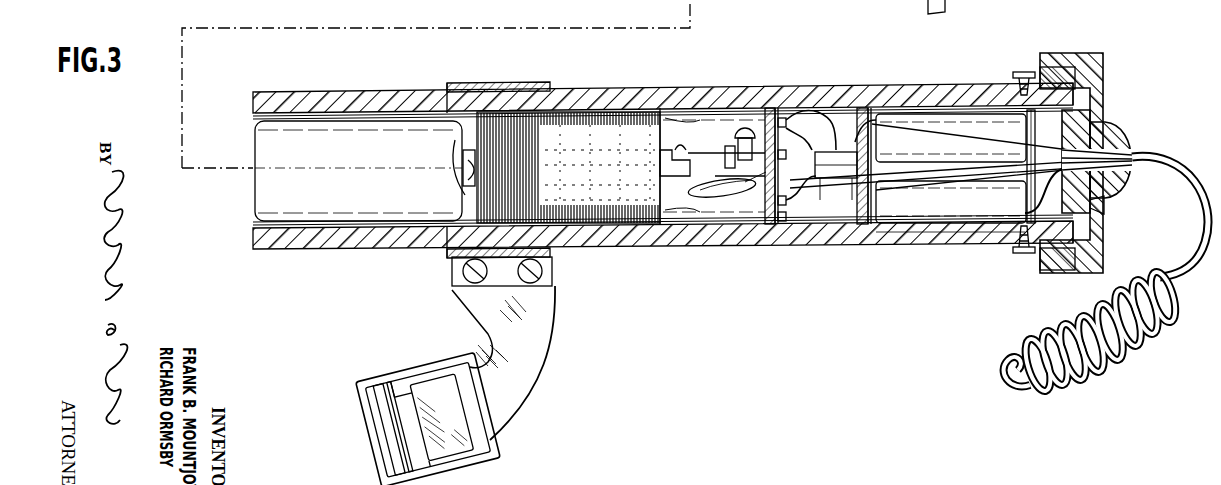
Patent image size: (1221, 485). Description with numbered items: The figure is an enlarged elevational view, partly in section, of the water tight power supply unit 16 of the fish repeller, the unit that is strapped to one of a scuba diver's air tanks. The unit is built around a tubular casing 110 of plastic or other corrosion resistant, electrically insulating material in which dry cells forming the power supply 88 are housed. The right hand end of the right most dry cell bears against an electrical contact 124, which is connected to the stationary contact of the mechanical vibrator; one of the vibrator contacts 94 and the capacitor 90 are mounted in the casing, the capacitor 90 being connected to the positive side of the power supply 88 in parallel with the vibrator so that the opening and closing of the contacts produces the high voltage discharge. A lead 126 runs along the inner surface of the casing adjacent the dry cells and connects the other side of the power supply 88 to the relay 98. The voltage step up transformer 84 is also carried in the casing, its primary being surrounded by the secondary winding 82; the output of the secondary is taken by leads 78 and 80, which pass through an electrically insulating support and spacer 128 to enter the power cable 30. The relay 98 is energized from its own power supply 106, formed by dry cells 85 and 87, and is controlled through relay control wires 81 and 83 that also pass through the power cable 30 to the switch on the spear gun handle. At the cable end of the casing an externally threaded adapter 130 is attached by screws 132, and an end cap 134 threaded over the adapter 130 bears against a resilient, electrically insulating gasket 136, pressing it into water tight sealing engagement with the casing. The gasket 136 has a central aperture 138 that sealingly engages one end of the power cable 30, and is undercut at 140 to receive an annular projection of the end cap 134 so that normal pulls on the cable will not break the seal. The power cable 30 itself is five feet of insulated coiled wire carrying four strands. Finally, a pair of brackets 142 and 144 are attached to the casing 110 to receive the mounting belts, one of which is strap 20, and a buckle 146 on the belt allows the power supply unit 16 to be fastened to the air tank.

The power supply unit 16 is at (508, 74).
The strap 20 is at (478, 318).
The power cable 30 is at (1021, 340).
The lead 78 is at (677, 118).
The lead 80 is at (679, 212).
The relay control wire 81 is at (926, 140).
The secondary winding 82 is at (568, 128).
The relay control wire 83 is at (1043, 155).
The voltage step up transformer 84 is at (599, 108).
The dry cell 85 is at (896, 116).
The dry cell 87 is at (941, 205).
The power supply 88 is at (305, 87).
The capacitor 90 is at (721, 200).
The vibrator contact 94 is at (700, 150).
The relay 98 is at (836, 180).
The power supply 106 is at (960, 256).
The tubular casing 110 is at (396, 98).
The electrical contact 124 is at (455, 145).
The lead 126 is at (816, 118).
The electrically insulating support and spacer 128 is at (771, 110).
The externally threaded adapter 130 is at (1063, 268).
The screw 132 is at (1023, 72).
The end cap 134 is at (1096, 90).
The gasket 136 is at (1100, 203).
The central aperture 138 is at (1126, 140).
The undercut 140 is at (1096, 118).
The bracket 142 is at (545, 0).
The bracket 144 is at (452, 272).
The buckle 146 is at (391, 378).